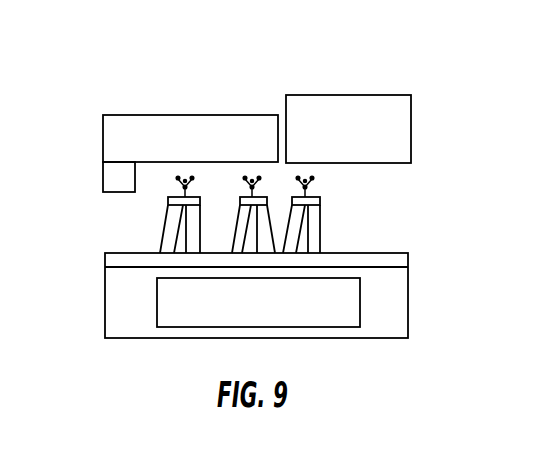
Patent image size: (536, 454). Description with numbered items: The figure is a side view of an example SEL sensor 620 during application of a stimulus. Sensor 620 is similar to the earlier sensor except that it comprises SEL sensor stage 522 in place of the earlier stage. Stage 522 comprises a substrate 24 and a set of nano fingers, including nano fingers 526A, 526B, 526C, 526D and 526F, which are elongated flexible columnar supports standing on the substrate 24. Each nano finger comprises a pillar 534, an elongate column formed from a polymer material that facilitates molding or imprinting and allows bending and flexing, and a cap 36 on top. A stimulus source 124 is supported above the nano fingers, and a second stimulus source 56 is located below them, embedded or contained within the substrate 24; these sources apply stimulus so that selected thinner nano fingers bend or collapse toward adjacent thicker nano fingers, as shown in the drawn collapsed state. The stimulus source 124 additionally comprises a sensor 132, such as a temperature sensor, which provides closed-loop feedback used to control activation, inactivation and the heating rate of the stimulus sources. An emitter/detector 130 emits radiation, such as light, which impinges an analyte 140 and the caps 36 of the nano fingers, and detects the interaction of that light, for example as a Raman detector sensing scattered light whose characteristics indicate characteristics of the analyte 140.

The SEL sensor 620 is at (214, 71).
The stimulus source 124 is at (103, 133).
The sensor 132 is at (103, 174).
The SEL emitter/detector 130 is at (411, 132).
The substrate 24 is at (256, 315).
The nano finger 526A is at (162, 240).
The nano finger 526B is at (179, 228).
The nano finger 526C is at (233, 240).
The nano finger 526D is at (275, 253).
The nano finger 526F is at (360, 229).
The cap 36 is at (320, 200).
The pillar 534 is at (321, 238).
The stimulus source 56 is at (326, 327).
The SEL sensor stage 522 is at (423, 249).
The analyte 140 is at (141, 210).